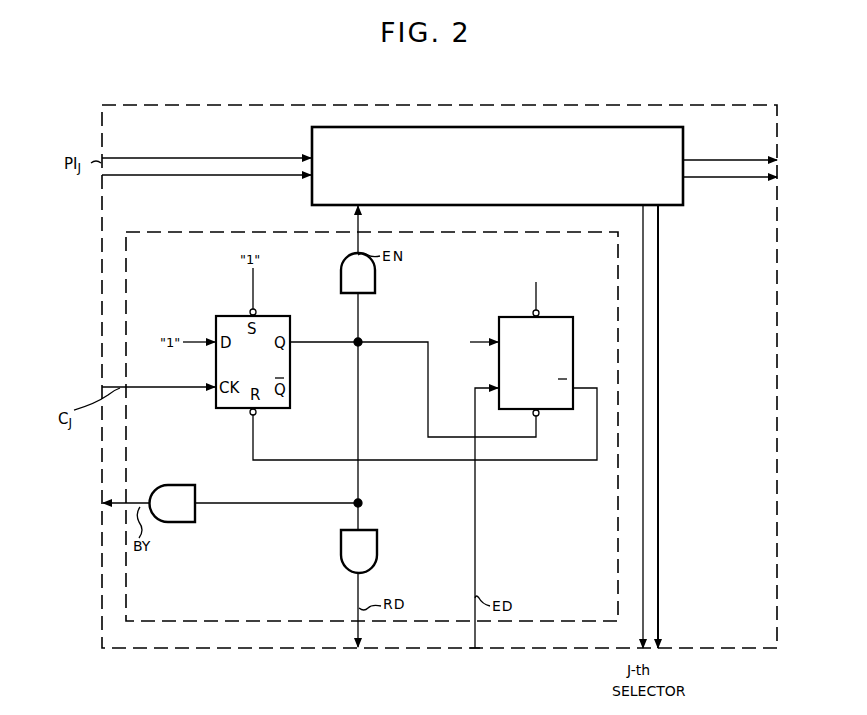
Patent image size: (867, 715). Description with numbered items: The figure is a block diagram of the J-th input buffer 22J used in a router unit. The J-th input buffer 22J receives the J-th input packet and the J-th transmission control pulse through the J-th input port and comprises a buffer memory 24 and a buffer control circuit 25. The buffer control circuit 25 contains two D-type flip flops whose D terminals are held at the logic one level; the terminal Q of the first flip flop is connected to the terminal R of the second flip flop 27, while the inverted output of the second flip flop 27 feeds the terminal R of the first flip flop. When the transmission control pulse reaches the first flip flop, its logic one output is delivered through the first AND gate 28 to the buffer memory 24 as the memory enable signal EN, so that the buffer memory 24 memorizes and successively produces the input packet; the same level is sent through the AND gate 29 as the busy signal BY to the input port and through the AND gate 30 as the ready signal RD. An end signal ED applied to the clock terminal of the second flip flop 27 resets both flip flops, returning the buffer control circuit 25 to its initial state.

The J-th input buffer 22J is at (778, 480).
The buffer memory 24 is at (688, 150).
The buffer control circuit 25 is at (241, 230).
The second D-type flip flop 27 is at (562, 316).
The first AND gate 28 is at (376, 292).
The second AND gate 29 is at (188, 484).
The second AND gate 30 is at (378, 547).